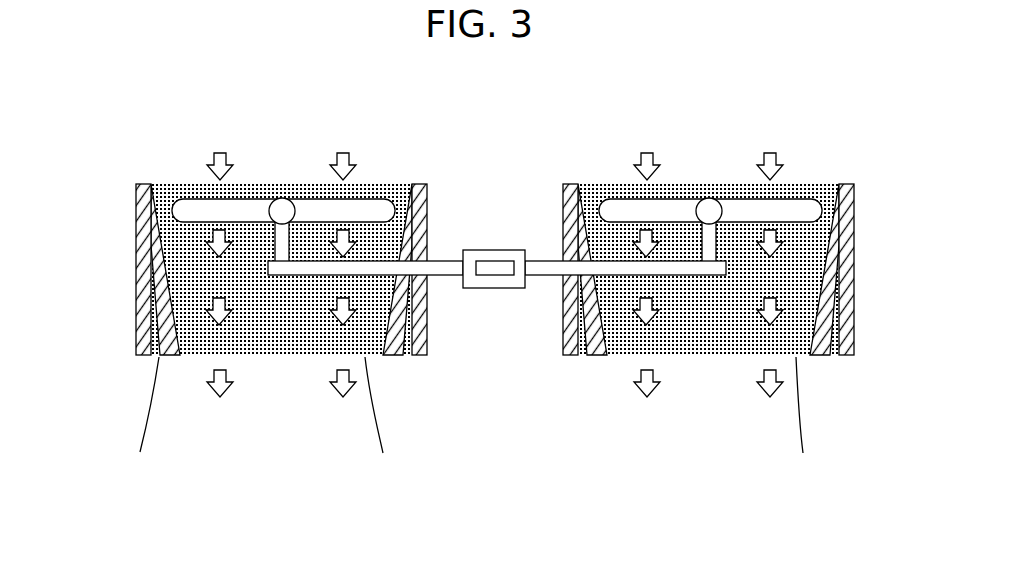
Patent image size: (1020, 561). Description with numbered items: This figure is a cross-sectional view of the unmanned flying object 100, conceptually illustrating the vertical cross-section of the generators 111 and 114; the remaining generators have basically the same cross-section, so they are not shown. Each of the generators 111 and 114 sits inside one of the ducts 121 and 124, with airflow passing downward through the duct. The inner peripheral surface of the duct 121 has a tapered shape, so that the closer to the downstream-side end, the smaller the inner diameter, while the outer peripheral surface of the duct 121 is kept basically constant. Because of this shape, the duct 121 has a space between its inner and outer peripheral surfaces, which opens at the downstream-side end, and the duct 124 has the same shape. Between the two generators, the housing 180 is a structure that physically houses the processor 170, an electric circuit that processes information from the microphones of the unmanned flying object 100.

The unmanned flying object 100 is at (463, 244).
The generator 111 is at (373, 197).
The generator 114 is at (803, 197).
The duct 121 is at (142, 357).
The duct 124 is at (569, 357).
The processor 170 is at (496, 250).
The housing 180 is at (496, 250).